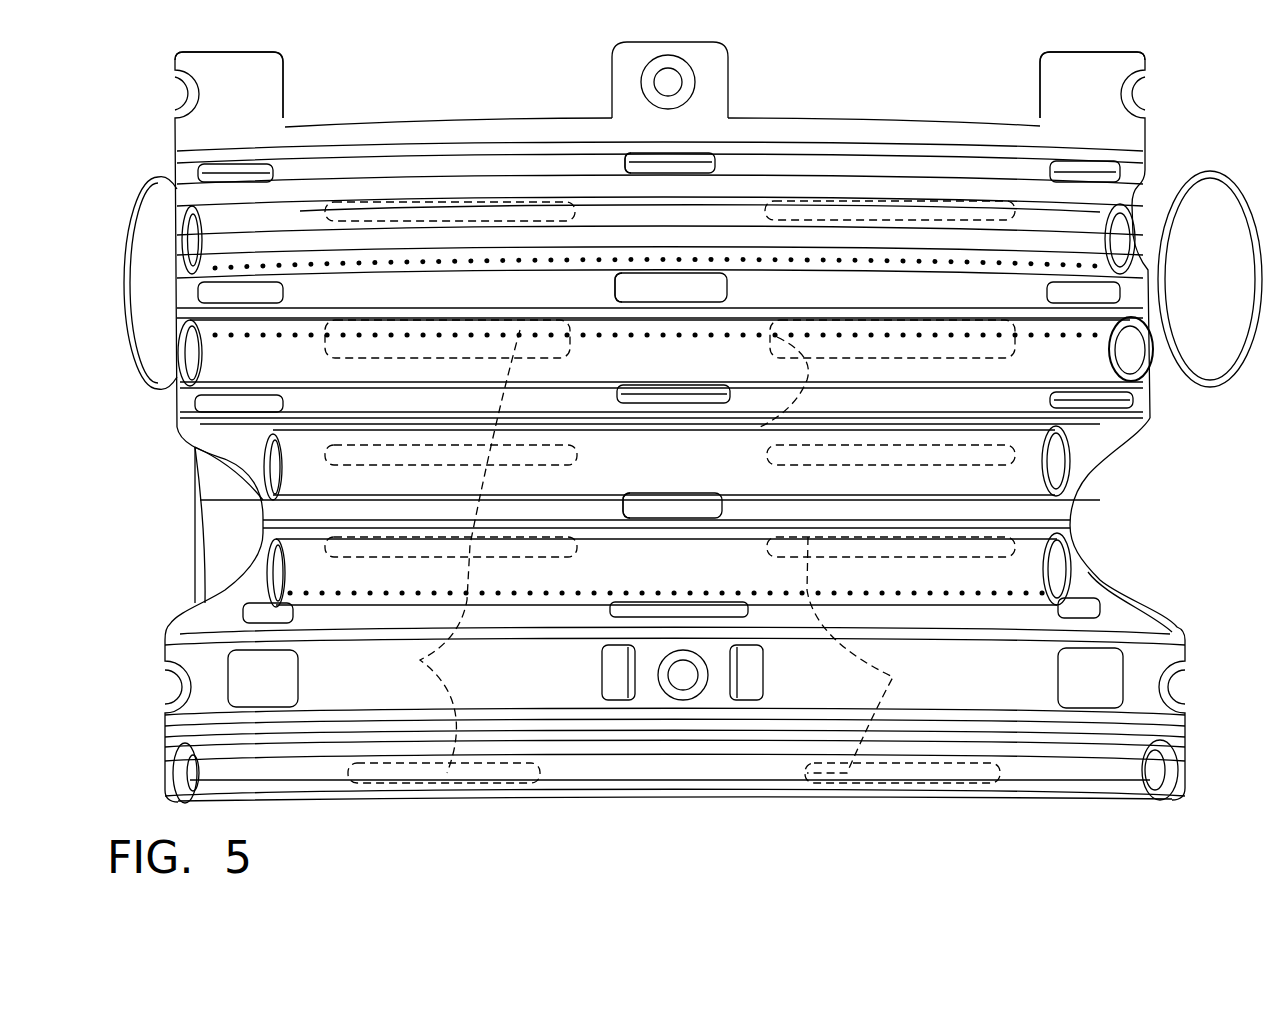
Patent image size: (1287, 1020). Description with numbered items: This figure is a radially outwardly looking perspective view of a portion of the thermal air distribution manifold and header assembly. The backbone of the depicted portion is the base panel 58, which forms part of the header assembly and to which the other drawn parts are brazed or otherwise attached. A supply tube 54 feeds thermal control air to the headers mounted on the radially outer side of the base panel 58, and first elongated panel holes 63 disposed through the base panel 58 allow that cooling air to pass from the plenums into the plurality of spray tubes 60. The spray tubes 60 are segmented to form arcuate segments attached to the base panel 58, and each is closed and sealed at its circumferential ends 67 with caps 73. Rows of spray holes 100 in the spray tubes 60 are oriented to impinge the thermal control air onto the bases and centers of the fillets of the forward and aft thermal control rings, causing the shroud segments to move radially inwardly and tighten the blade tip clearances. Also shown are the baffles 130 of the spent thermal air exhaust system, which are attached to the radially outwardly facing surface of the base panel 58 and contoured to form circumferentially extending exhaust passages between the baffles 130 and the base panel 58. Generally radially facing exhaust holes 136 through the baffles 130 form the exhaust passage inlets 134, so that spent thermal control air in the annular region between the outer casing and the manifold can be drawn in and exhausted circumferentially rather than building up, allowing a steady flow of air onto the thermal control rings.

The supply tube 54 is at (1162, 171).
The base panel 58 is at (428, 123).
The spray tubes 60 is at (213, 221).
The first elongated panel holes 63 is at (557, 217).
The circumferential ends 67 is at (238, 375).
The caps 73 is at (1115, 234).
The spray holes 100 is at (232, 268).
The baffles 130 is at (322, 167).
The exhaust passage inlets 134 is at (680, 160).
The exhaust holes 136 is at (623, 163).